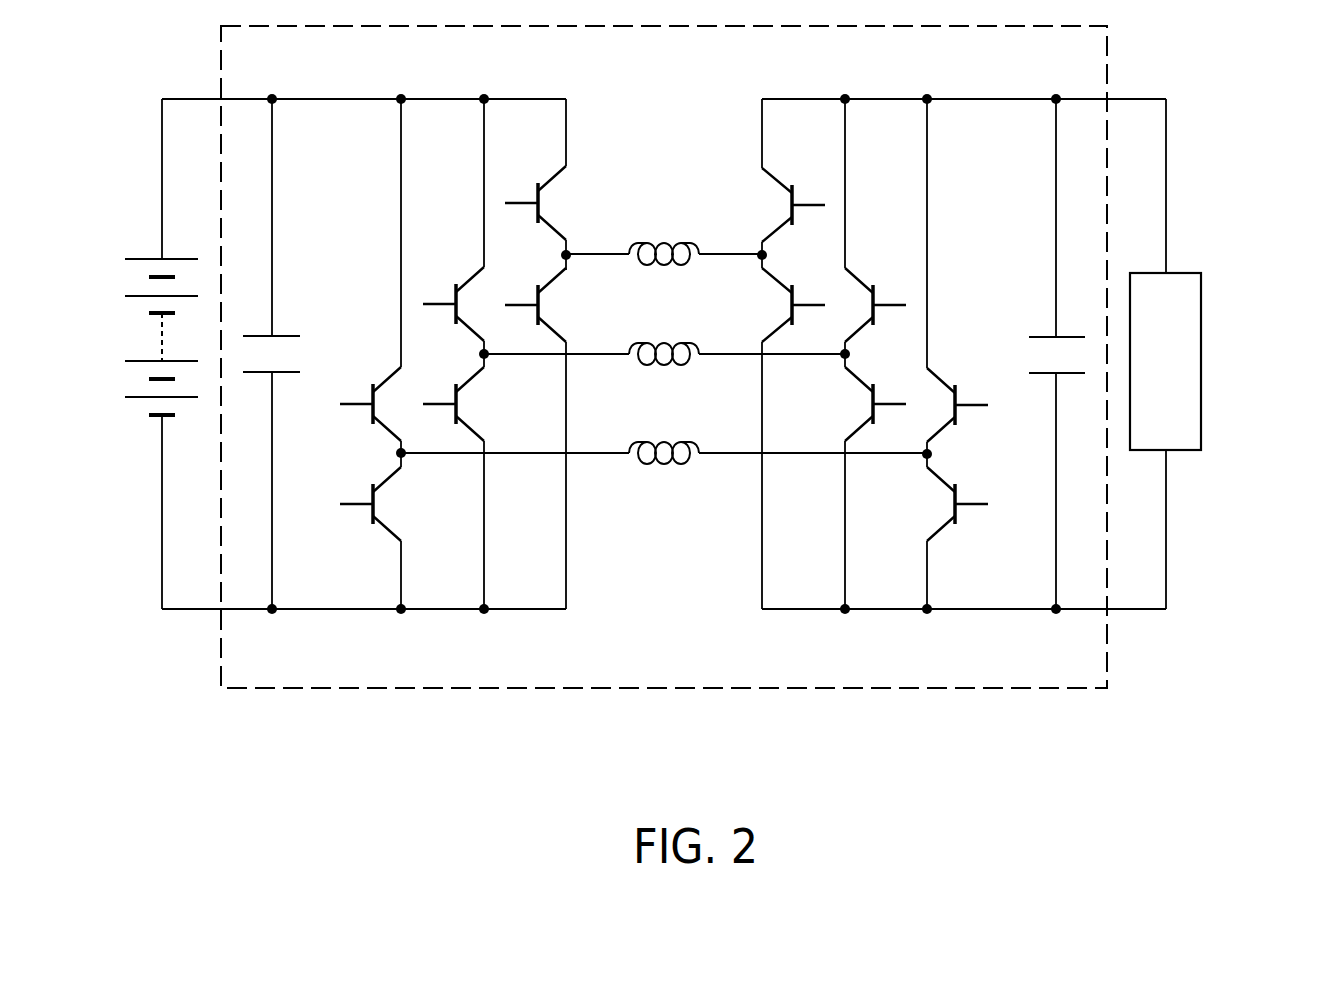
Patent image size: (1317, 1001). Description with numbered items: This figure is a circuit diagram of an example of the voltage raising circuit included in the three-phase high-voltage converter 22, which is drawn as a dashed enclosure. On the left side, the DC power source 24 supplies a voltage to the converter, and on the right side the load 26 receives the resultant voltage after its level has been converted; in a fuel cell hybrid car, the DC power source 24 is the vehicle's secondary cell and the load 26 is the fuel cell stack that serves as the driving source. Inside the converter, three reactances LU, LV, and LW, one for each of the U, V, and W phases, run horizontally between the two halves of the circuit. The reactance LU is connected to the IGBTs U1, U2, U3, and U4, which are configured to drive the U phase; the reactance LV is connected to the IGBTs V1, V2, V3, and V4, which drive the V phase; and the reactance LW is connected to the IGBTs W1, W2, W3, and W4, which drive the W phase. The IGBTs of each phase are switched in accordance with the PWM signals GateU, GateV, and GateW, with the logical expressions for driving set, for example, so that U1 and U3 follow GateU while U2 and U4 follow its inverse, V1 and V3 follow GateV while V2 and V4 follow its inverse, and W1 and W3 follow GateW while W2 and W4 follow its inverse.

The three-phase high-voltage converter 22 is at (808, 688).
The DC power source 24 is at (146, 258).
The load 26 is at (1201, 310).
The IGBT U1 is at (531, 203).
The IGBT U2 is at (531, 305).
The IGBT U3 is at (795, 305).
The IGBT U4 is at (795, 205).
The IGBT V1 is at (449, 304).
The IGBT V2 is at (449, 404).
The IGBT V3 is at (877, 404).
The IGBT V4 is at (877, 305).
The IGBT W1 is at (364, 404).
The IGBT W2 is at (364, 504).
The IGBT W3 is at (962, 504).
The IGBT W4 is at (962, 405).
The reactance LU is at (664, 270).
The reactance LV is at (664, 370).
The reactance LW is at (664, 470).